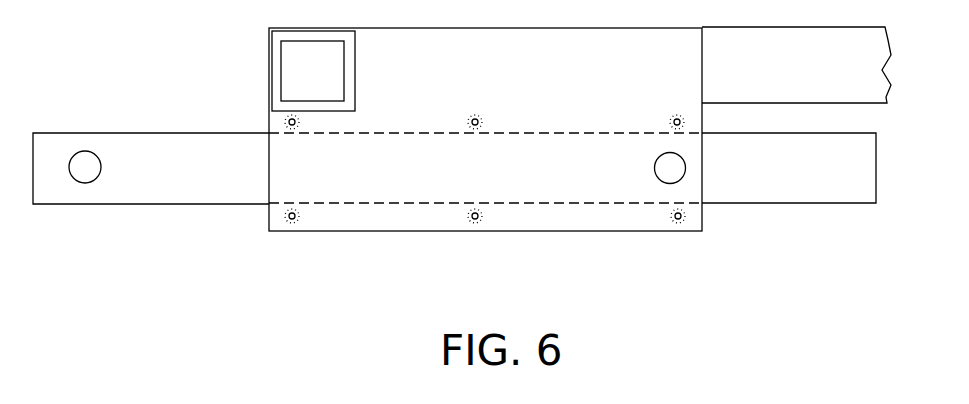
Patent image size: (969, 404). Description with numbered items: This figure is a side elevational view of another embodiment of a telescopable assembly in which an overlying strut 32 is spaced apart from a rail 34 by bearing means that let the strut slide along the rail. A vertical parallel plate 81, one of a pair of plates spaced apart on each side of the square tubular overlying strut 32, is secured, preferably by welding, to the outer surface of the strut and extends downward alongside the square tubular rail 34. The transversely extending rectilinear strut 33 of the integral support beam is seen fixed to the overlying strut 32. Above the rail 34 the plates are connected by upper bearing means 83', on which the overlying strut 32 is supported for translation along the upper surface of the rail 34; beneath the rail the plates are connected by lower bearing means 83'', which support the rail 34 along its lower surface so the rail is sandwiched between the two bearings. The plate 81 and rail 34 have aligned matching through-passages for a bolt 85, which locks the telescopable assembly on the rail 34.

The vertical parallel plate 81 is at (385, 223).
The rectilinear strut 33 is at (355, 60).
The overlying strut 32 is at (807, 84).
The rail 34 is at (807, 174).
The upper bearing means 83' is at (484, 99).
The lower bearing means 83'' is at (485, 186).
The bolt 85 is at (662, 188).